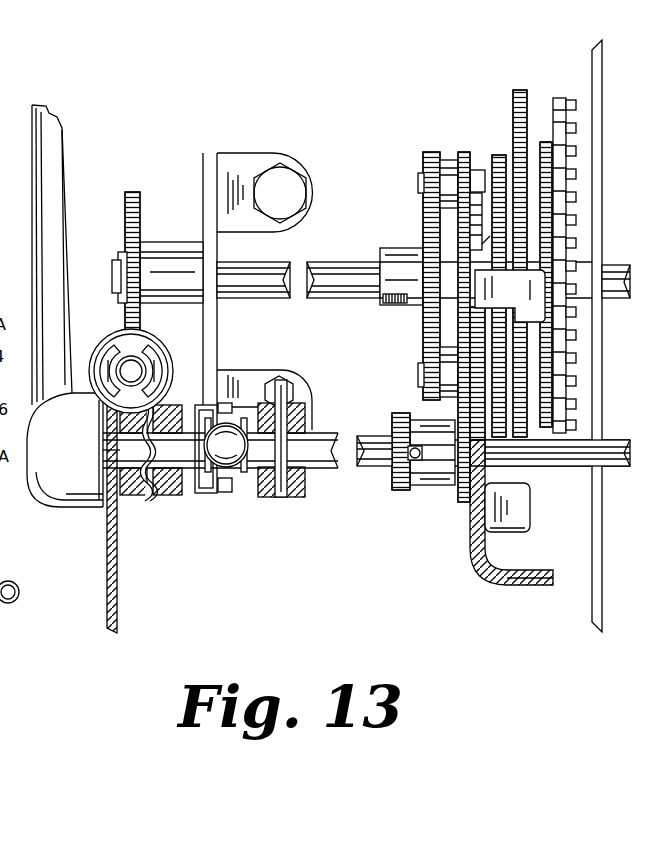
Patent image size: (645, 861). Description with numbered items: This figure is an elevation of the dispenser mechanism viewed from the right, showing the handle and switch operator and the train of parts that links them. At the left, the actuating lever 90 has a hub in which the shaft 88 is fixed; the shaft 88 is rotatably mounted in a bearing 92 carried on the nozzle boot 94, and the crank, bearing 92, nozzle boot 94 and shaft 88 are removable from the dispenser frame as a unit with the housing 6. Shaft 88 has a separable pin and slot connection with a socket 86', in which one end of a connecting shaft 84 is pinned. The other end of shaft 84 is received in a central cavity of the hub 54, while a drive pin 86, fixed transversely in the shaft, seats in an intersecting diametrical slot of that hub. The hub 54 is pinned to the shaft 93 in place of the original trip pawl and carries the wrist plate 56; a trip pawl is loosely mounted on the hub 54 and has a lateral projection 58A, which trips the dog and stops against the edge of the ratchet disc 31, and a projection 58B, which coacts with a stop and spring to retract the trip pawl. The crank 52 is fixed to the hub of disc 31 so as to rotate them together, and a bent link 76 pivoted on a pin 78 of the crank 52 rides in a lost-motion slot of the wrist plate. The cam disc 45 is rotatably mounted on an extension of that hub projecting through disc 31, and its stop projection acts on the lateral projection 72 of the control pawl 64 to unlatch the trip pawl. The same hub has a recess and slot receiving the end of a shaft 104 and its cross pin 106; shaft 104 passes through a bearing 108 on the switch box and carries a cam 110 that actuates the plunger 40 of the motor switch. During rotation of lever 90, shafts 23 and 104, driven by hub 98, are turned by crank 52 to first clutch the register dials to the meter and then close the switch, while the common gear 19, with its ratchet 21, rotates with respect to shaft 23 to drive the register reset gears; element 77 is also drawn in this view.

The actuating lever 90 is at (60, 180).
The cam 110 is at (141, 208).
The plunger 40 is at (128, 364).
The bearing 108 is at (240, 163).
The shaft 104 is at (272, 267).
The hub 98 is at (383, 263).
The cross pin 106 is at (383, 310).
The pin 78 is at (423, 186).
The bent link 76 is at (423, 213).
The wrist plate 56 is at (457, 326).
The control pawl 64 is at (480, 331).
The crank 52 is at (478, 224).
The ratchet disc 31 is at (507, 156).
The cam disc 45 is at (520, 91).
The ratchet 21 is at (548, 158).
The common gear 19 is at (576, 110).
The lateral projection 72 is at (547, 266).
The shaft 23 is at (605, 266).
The shaft 77 is at (628, 416).
The shaft 93 is at (609, 466).
The lateral projection 58A is at (530, 514).
The projection 58B is at (508, 573).
The drive pin 86 is at (412, 481).
The hub 54 is at (408, 417).
The connecting shaft 84 is at (362, 438).
The socket 86' is at (254, 453).
The shaft 88 is at (158, 482).
The bearing 92 is at (128, 486).
The nozzle boot 94 is at (148, 493).
The housing 6 is at (117, 603).